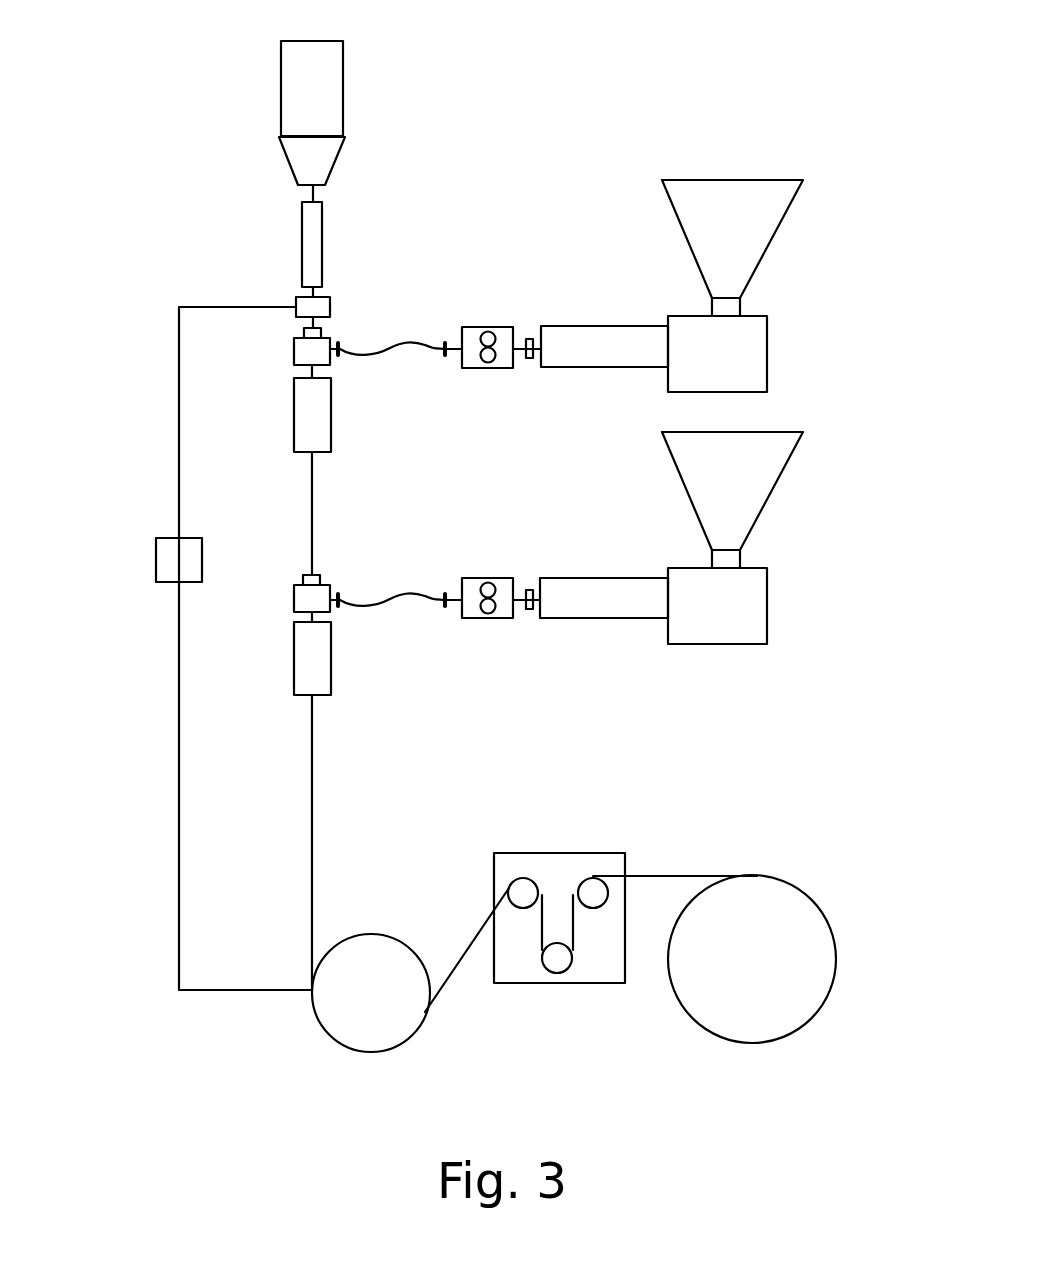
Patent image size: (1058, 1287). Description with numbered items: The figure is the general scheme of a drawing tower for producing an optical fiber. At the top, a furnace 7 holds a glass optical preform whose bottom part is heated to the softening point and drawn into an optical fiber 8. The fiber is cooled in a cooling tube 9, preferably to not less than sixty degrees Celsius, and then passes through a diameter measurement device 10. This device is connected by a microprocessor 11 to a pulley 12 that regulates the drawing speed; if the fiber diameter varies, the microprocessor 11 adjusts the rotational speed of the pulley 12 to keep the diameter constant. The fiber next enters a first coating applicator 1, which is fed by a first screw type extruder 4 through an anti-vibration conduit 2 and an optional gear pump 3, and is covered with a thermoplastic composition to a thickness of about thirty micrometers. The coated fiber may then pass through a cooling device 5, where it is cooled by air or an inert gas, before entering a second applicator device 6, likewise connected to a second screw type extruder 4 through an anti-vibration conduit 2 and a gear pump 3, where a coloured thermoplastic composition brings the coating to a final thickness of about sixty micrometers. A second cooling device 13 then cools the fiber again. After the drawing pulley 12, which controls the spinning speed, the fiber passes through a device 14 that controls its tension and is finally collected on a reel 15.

The first coating applicator 1 is at (318, 350).
The anti-vibration conduit 2 is at (410, 343).
The gear pump 3 is at (480, 333).
The screw type extruder 4 is at (565, 350).
The cooling device 5 is at (318, 404).
The second applicator device 6 is at (320, 600).
The furnace 7 is at (325, 112).
The optical fiber 8 is at (315, 193).
The cooling tube 9 is at (311, 237).
The diameter measurement device 10 is at (311, 305).
The microprocessor 11 is at (173, 560).
The pulley 12 is at (370, 1030).
The second cooling device 13 is at (315, 685).
The tension controlling device 14 is at (558, 880).
The reel 15 is at (775, 917).